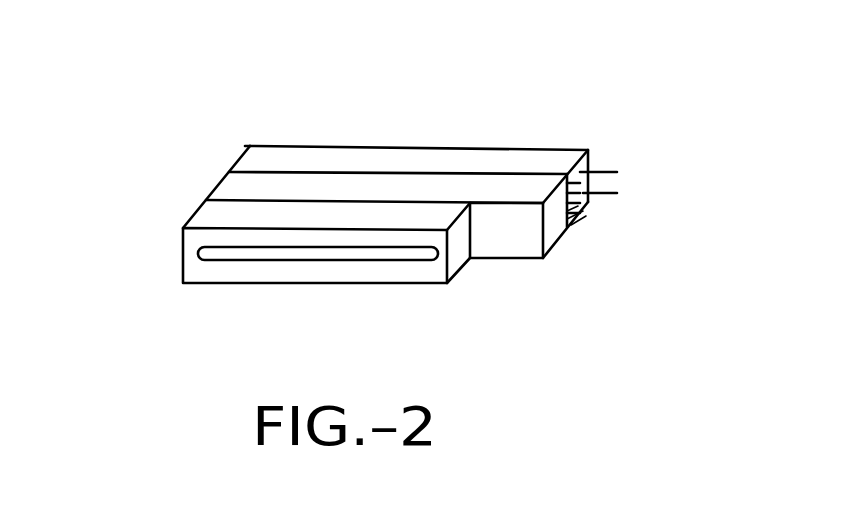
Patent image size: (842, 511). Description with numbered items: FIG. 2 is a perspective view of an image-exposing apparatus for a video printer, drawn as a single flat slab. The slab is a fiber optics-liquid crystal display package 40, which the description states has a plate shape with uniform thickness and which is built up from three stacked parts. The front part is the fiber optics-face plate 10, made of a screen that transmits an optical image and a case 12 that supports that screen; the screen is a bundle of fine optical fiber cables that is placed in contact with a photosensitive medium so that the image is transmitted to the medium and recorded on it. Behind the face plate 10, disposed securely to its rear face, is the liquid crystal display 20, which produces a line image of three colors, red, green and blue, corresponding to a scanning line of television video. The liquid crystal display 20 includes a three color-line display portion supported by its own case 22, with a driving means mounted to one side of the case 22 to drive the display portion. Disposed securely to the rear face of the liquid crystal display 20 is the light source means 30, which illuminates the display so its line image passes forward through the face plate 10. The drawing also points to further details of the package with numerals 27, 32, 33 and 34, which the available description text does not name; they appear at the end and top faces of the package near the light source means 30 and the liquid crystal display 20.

The fiber optics-face plate 10 is at (272, 283).
The case 12 is at (196, 269).
The liquid crystal display 20 is at (216, 183).
The case 22 is at (243, 185).
The electrical contacts 27 is at (585, 203).
The light source means 30 is at (411, 148).
The upper surface region 32 is at (307, 160).
The end portion 33 is at (542, 157).
The leads 34 is at (612, 172).
The fiber optics-liquid crystal display package 40 is at (243, 151).